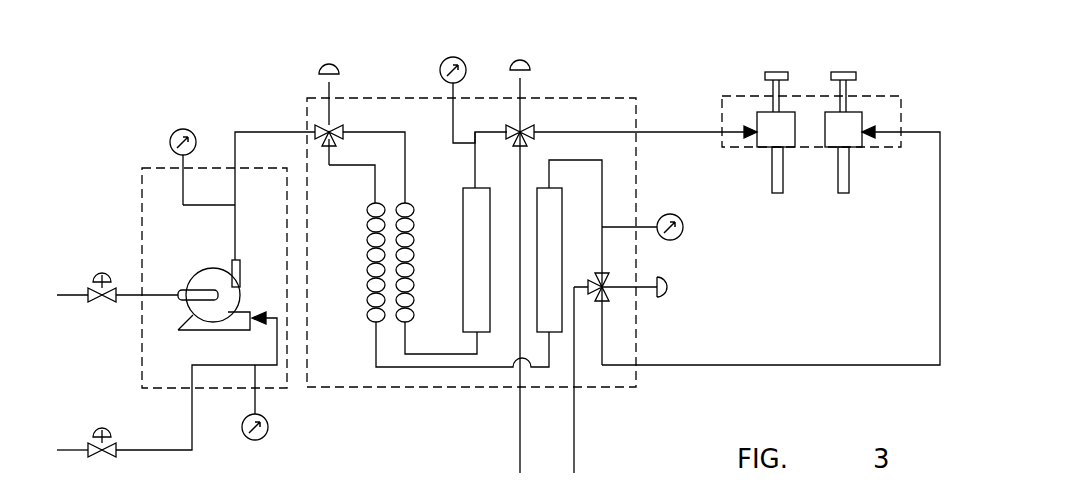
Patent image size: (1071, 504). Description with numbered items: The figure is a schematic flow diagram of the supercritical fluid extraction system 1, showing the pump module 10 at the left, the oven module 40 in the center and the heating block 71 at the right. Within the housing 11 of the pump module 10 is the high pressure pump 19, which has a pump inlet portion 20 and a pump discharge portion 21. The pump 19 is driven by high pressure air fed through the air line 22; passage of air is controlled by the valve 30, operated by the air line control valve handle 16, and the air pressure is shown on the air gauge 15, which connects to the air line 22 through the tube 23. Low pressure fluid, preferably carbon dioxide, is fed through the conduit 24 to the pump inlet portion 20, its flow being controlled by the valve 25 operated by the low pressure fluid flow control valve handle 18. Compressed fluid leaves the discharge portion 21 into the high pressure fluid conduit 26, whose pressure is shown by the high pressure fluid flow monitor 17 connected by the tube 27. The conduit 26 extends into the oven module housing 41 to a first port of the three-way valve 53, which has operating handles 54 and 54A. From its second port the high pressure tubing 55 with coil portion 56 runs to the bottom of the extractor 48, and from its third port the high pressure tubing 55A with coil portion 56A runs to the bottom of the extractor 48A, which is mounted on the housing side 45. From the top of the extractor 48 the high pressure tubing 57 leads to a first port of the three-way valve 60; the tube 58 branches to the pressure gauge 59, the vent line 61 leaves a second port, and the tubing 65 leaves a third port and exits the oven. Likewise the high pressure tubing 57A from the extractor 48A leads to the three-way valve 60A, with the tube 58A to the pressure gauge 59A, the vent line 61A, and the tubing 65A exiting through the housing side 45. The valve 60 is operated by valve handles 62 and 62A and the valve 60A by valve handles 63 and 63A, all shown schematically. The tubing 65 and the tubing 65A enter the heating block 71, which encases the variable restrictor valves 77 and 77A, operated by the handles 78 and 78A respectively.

The supercritical fluid extraction system 1 is at (603, 82).
The pump module 10 is at (96, 121).
The housing 11 is at (142, 182).
The air gauge 15 is at (258, 441).
The air line control valve handle 16 is at (104, 428).
The high pressure fluid flow monitor 17 is at (183, 129).
The low pressure fluid flow control valve handle 18 is at (103, 273).
The high pressure pump 19 is at (240, 297).
The pump inlet portion 20 is at (196, 301).
The pump discharge portion 21 is at (231, 263).
The air line 22 is at (72, 450).
The tube 23 is at (258, 400).
The conduit 24 is at (72, 295).
The valve 25 is at (105, 302).
The high pressure fluid conduit 26 is at (236, 181).
The tube 27 is at (204, 207).
The valve 30 is at (116, 453).
The oven module 40 is at (425, 454).
The oven module housing 41 is at (378, 98).
The housing side 45 is at (636, 346).
The extractor 48 is at (463, 243).
The extractor 48A is at (563, 252).
The three-way valve 53 is at (315, 131).
The operating handle 54 is at (274, 100).
The operating handle 54A is at (329, 66).
The high pressure tubing 55 is at (406, 146).
The high pressure tubing 55A is at (393, 186).
The coil portion 56 is at (415, 318).
The coil portion 56A is at (366, 296).
The high pressure tubing 57 is at (475, 165).
The high pressure tubing 57A is at (604, 160).
The tube 58 is at (454, 112).
The tube 58A is at (612, 226).
The pressure gauge 59 is at (444, 68).
The pressure gauge 59A is at (684, 228).
The three-way valve 60 is at (534, 126).
The three-way valve 60A is at (606, 298).
The vent line 61 is at (521, 424).
The vent line 61A is at (575, 424).
The valve handle 62 is at (547, 252).
The valve handle 62A is at (521, 67).
The valve handle 63 is at (684, 288).
The valve handle 63A is at (668, 287).
The tubing 65 is at (680, 132).
The tubing 65A is at (810, 365).
The heating block 71 is at (893, 96).
The variable restrictor valve 77 is at (786, 145).
The variable restrictor valve 77A is at (853, 145).
The handle 78 is at (777, 72).
The handle 78A is at (843, 72).